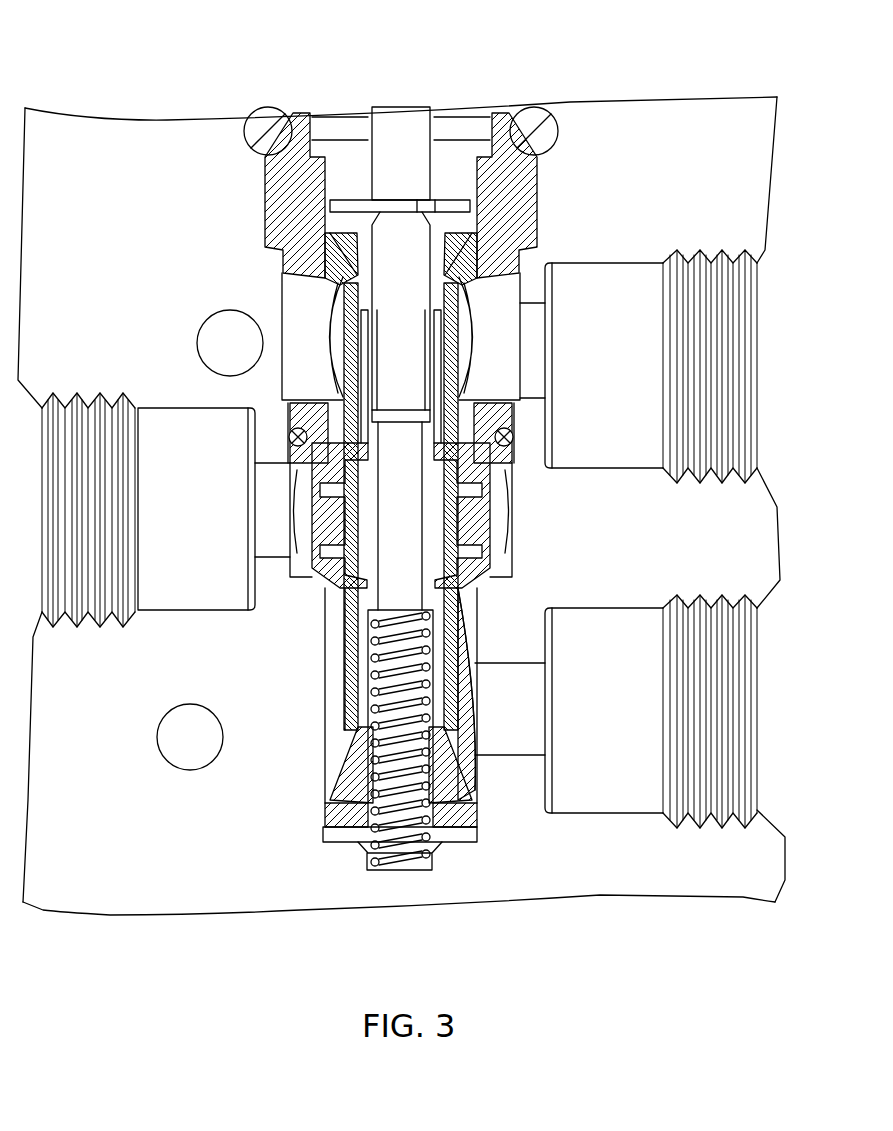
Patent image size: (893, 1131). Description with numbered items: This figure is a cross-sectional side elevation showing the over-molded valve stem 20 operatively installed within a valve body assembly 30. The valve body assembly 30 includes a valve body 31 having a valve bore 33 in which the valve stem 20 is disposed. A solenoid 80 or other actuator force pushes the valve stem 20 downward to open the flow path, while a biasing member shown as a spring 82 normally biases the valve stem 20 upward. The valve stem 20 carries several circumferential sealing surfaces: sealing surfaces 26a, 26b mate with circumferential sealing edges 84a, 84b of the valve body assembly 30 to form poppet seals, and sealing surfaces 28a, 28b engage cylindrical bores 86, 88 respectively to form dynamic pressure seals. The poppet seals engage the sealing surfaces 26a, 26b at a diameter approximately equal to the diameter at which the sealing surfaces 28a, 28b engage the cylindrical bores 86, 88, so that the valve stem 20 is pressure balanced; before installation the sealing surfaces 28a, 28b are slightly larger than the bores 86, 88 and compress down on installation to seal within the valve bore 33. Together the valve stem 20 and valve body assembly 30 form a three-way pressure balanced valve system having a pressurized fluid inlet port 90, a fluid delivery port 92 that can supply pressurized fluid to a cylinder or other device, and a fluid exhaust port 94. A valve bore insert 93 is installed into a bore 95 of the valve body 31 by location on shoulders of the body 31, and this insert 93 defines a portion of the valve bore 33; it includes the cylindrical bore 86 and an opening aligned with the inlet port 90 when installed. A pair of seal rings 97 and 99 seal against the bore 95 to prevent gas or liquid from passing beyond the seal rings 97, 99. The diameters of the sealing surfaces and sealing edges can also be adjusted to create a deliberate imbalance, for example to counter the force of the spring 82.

The valve body assembly 30 is at (139, 76).
The valve body 31 is at (140, 897).
The seal ring 97 is at (272, 133).
The valve bore 33 is at (352, 170).
The solenoid 80 is at (398, 125).
The valve bore insert 93 is at (517, 195).
The sealing surface 28a is at (330, 245).
The cylindrical bore 86 is at (470, 265).
The pressurized fluid inlet port 90 is at (528, 335).
The bore 95 is at (281, 300).
The fluid delivery port 92 is at (273, 503).
The sealing surface 26a is at (325, 440).
The seal ring 99 is at (507, 443).
The circumferential sealing edge 84a is at (508, 468).
The sealing surface 26b is at (345, 590).
The valve stem 20 is at (330, 647).
The cylindrical bore 88 is at (333, 712).
The spring 82 is at (373, 747).
The sealing surface 28b is at (470, 793).
The circumferential sealing edge 84b is at (473, 580).
The fluid exhaust port 94 is at (502, 683).